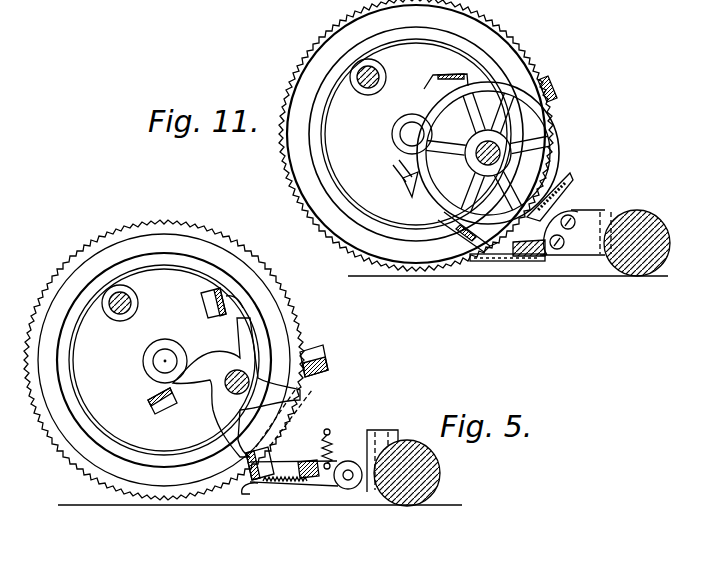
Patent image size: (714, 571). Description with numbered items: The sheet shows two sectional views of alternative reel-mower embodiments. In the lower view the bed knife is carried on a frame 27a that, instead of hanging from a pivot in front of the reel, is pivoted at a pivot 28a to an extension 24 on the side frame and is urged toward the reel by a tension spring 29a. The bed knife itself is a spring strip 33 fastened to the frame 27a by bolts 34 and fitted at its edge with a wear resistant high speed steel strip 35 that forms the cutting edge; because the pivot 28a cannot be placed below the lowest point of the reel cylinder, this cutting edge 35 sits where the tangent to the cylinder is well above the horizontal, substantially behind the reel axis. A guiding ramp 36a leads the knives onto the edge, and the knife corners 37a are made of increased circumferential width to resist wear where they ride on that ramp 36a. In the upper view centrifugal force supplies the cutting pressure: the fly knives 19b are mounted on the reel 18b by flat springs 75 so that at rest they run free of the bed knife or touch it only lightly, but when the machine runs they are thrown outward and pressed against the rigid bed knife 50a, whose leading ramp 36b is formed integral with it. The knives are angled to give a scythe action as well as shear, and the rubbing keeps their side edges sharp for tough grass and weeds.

In FIG. 11, the flat springs 75 is at (553, 107).
In FIG. 11, the fly knives 19b is at (541, 82).
In FIG. 11, the reel 18b is at (462, 192).
In FIG. 11, the leading ramp 36b is at (476, 262).
In FIG. 11, the rigid bed knife 50a is at (503, 262).
In FIG. 5, the corners 37a is at (326, 348).
In FIG. 5, the frame 27a is at (318, 430).
In FIG. 5, the extension 24 is at (334, 437).
In FIG. 5, the tension spring 29a is at (368, 436).
In FIG. 5, the pivot 28a is at (350, 485).
In FIG. 5, the bolts 34 is at (306, 480).
In FIG. 5, the spring strip 33 is at (302, 482).
In FIG. 5, the wear resistant high speed steel strip 35 is at (273, 483).
In FIG. 5, the guiding ramp 36a is at (262, 483).